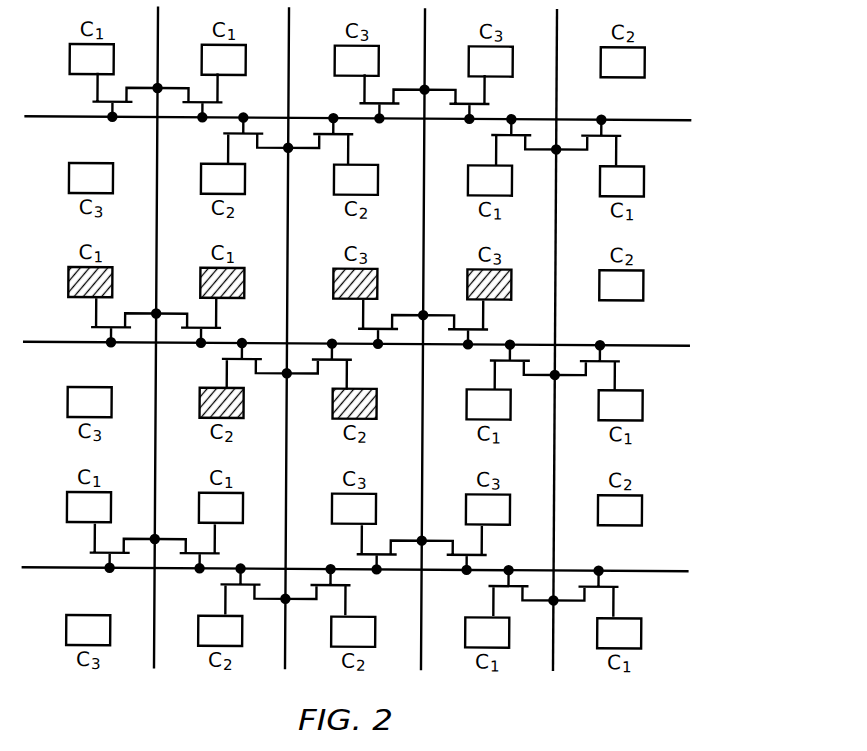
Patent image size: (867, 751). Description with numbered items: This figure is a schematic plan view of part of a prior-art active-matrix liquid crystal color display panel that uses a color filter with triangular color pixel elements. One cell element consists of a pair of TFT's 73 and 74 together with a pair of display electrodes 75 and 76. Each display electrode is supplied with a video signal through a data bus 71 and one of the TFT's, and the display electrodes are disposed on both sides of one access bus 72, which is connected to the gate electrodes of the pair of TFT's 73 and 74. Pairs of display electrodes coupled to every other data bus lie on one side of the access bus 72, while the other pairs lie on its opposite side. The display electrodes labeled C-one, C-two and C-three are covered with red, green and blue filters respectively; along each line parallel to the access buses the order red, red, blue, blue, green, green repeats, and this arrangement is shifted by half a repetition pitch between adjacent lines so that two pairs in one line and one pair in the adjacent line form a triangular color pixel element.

The bus 71 is at (557, 107).
The access bus 72 is at (655, 120).
The TFT 73 is at (506, 379).
The TFT 74 is at (615, 378).
The display electrode 75 is at (377, 280).
The display electrode 76 is at (512, 278).